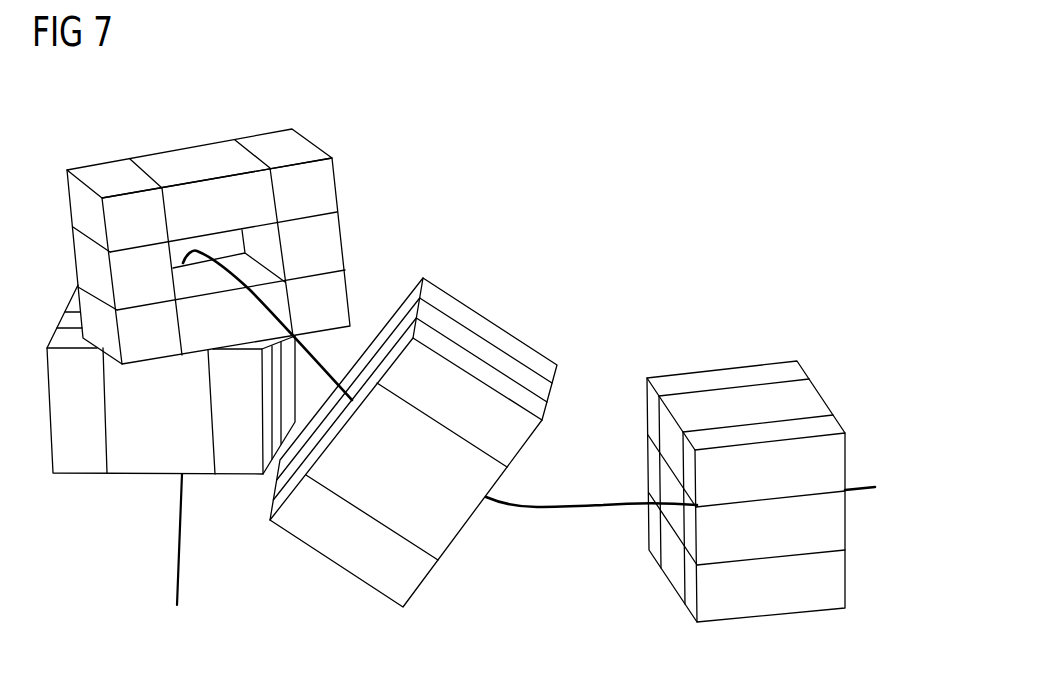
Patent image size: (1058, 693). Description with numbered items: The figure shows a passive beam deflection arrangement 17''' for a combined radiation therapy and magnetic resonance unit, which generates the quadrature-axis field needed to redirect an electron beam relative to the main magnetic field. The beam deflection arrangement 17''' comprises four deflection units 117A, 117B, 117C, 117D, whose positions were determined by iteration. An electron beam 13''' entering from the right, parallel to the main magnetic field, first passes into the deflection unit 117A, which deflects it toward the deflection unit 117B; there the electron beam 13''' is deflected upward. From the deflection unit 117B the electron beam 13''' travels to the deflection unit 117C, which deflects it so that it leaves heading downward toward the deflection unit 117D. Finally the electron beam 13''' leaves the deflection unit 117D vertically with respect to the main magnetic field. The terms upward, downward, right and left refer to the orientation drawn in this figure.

The beam deflection arrangement 17''' is at (461, 355).
The deflection unit 117A is at (772, 352).
The deflection unit 117B is at (490, 302).
The deflection unit 117C is at (322, 142).
The deflection unit 117D is at (141, 492).
The electron beam 13''' is at (529, 419).